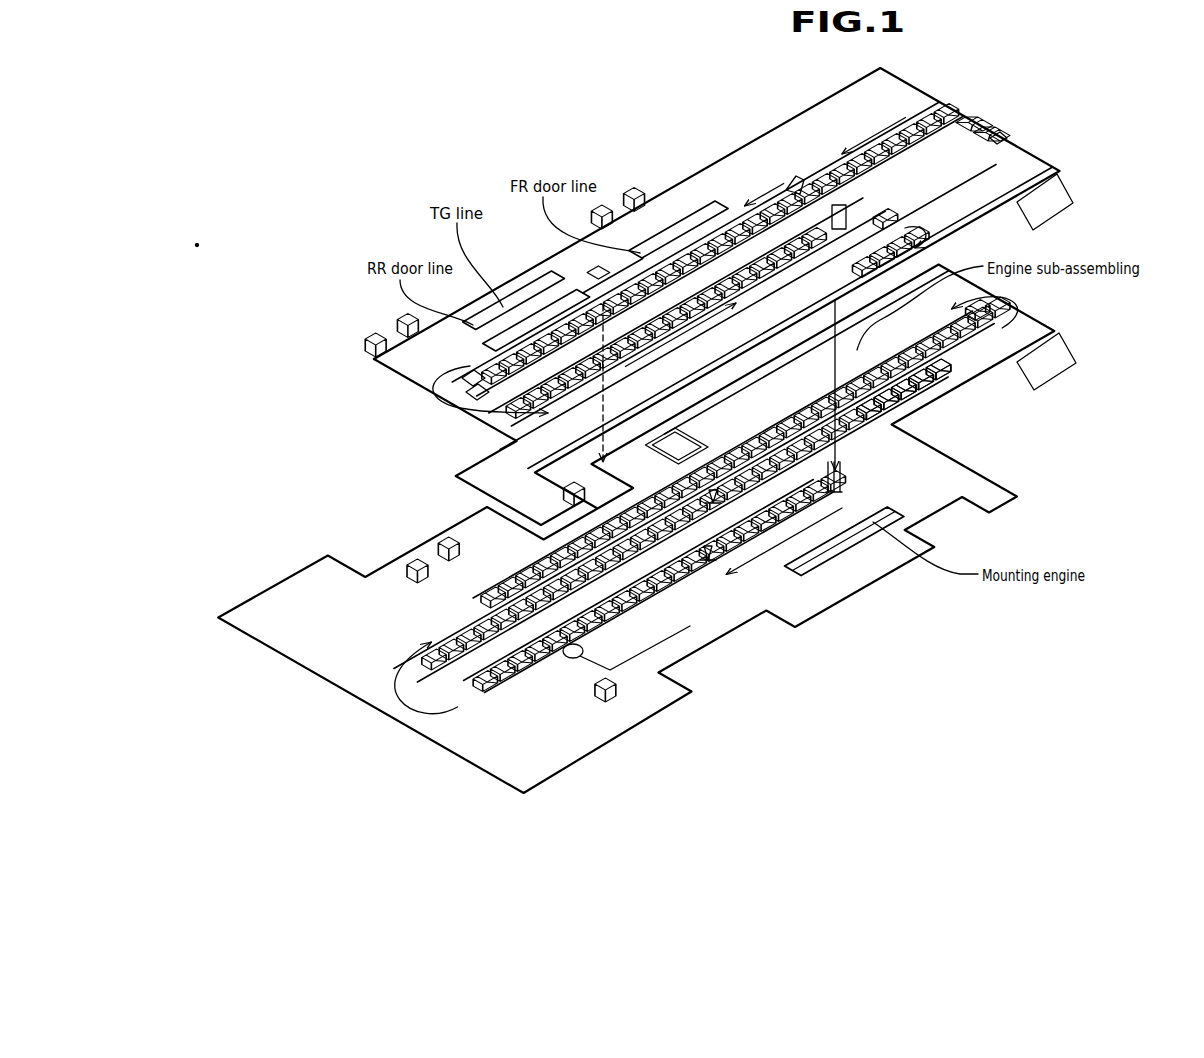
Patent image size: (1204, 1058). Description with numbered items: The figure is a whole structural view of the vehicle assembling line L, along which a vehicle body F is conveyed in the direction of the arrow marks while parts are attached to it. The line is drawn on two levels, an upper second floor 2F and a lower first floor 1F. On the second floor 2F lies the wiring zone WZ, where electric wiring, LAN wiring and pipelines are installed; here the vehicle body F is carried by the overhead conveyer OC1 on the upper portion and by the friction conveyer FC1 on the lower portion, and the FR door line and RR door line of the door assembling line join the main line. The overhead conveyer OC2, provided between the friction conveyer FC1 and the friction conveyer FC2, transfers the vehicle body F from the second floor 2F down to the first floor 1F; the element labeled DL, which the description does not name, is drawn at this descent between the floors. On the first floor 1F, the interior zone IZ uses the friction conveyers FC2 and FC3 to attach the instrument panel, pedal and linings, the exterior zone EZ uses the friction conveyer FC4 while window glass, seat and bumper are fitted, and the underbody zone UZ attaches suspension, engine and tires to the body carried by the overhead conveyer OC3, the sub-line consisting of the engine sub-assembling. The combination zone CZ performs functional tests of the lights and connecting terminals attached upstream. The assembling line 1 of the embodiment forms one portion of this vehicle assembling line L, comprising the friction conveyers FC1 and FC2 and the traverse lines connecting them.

The assembling line 1 is at (484, 352).
The vehicle assembling line L is at (360, 141).
The wiring zone WZ is at (700, 238).
The combination zone CZ is at (525, 588).
The exterior zone EZ is at (912, 408).
The interior zone IZ is at (862, 469).
The underbody zone UZ is at (520, 688).
The friction conveyer FC1 is at (490, 367).
The friction conveyer FC2 is at (798, 184).
The friction conveyer FC3 is at (760, 545).
The friction conveyer FC4 is at (987, 385).
The overhead conveyer OC1 is at (950, 115).
The overhead conveyer OC2 is at (910, 223).
The overhead conveyer OC3 is at (677, 570).
The drop lifter DL is at (835, 300).
The vehicle body F is at (992, 137).
The second floor 2F is at (626, 424).
The first floor 1F is at (1046, 361).